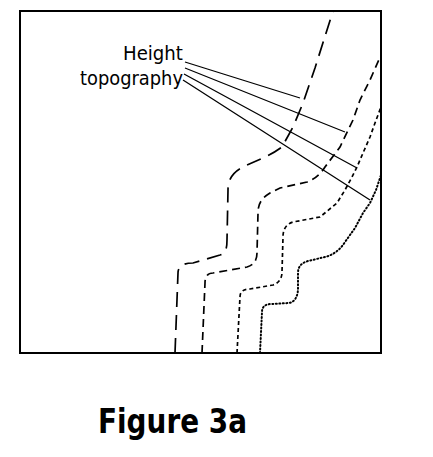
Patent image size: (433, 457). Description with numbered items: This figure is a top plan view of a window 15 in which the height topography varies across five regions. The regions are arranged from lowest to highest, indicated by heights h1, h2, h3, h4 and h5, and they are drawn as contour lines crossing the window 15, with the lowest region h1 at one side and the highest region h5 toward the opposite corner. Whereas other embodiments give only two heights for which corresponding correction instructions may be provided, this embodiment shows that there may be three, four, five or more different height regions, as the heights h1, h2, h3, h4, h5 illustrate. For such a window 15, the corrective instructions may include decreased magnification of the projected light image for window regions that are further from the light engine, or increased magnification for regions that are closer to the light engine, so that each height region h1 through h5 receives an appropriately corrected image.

The substrate surface region (height topography map) 15 is at (292, 332).
The lowest height region h1 is at (254, 182).
The second height region h2 is at (291, 204).
The third height region h3 is at (309, 230).
The fourth height region h4 is at (320, 264).
The highest height region h5 is at (361, 264).